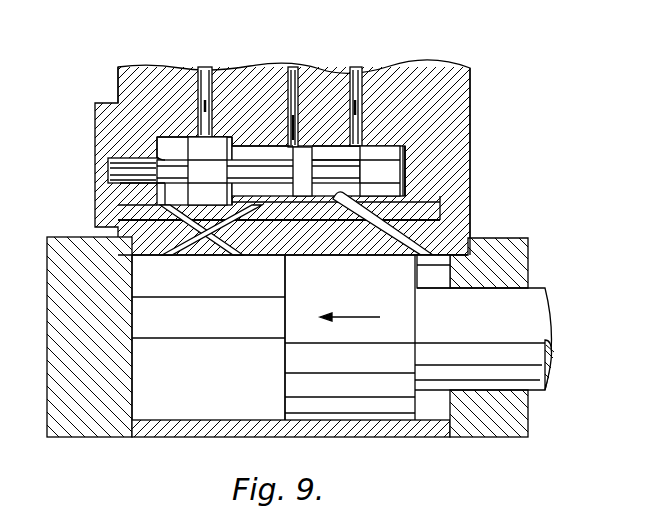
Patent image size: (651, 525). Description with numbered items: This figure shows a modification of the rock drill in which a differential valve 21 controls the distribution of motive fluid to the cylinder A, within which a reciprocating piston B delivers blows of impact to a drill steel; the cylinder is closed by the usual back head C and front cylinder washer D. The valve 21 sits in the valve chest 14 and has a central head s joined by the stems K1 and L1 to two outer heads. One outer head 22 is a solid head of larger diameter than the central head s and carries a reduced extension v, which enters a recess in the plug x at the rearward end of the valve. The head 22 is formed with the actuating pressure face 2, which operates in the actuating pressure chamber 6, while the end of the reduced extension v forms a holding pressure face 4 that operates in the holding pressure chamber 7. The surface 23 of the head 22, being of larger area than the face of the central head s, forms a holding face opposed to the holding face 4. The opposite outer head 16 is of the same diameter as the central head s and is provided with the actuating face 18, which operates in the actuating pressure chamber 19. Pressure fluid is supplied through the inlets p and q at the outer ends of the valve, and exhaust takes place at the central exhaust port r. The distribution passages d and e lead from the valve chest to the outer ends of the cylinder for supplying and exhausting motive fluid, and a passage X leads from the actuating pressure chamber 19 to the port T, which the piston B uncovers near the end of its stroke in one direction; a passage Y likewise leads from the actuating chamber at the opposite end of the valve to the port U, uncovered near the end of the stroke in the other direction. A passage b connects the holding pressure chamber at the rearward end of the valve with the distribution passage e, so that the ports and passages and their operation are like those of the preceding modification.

The actuating pressure face 2 is at (135, 67).
The outer head 22 is at (197, 157).
The inlet p is at (212, 78).
The surface of the head 23 is at (256, 168).
The stem K1 is at (252, 150).
The valve 21 is at (295, 83).
The exhaust port r is at (303, 157).
The central head s is at (335, 162).
The stem L1 is at (347, 146).
The inlet q is at (360, 90).
The valve chest 14 is at (390, 107).
The outer head 16 is at (388, 157).
The actuating pressure face 18 is at (440, 128).
The actuating pressure chamber 19 is at (410, 180).
The actuating pressure chamber 6 is at (175, 135).
The reduced extension v is at (113, 153).
The holding pressure face 4 is at (108, 165).
The plug x is at (103, 178).
The holding pressure chamber 7 is at (106, 205).
The distribution passage d is at (168, 256).
The passage Y is at (205, 242).
The port U is at (235, 222).
The passage b is at (270, 224).
The port T is at (345, 222).
The passage X is at (383, 228).
The distribution passage e is at (408, 258).
The back head C is at (90, 418).
The piston B is at (312, 396).
The cylinder A is at (418, 425).
The front cylinder washer D is at (503, 427).